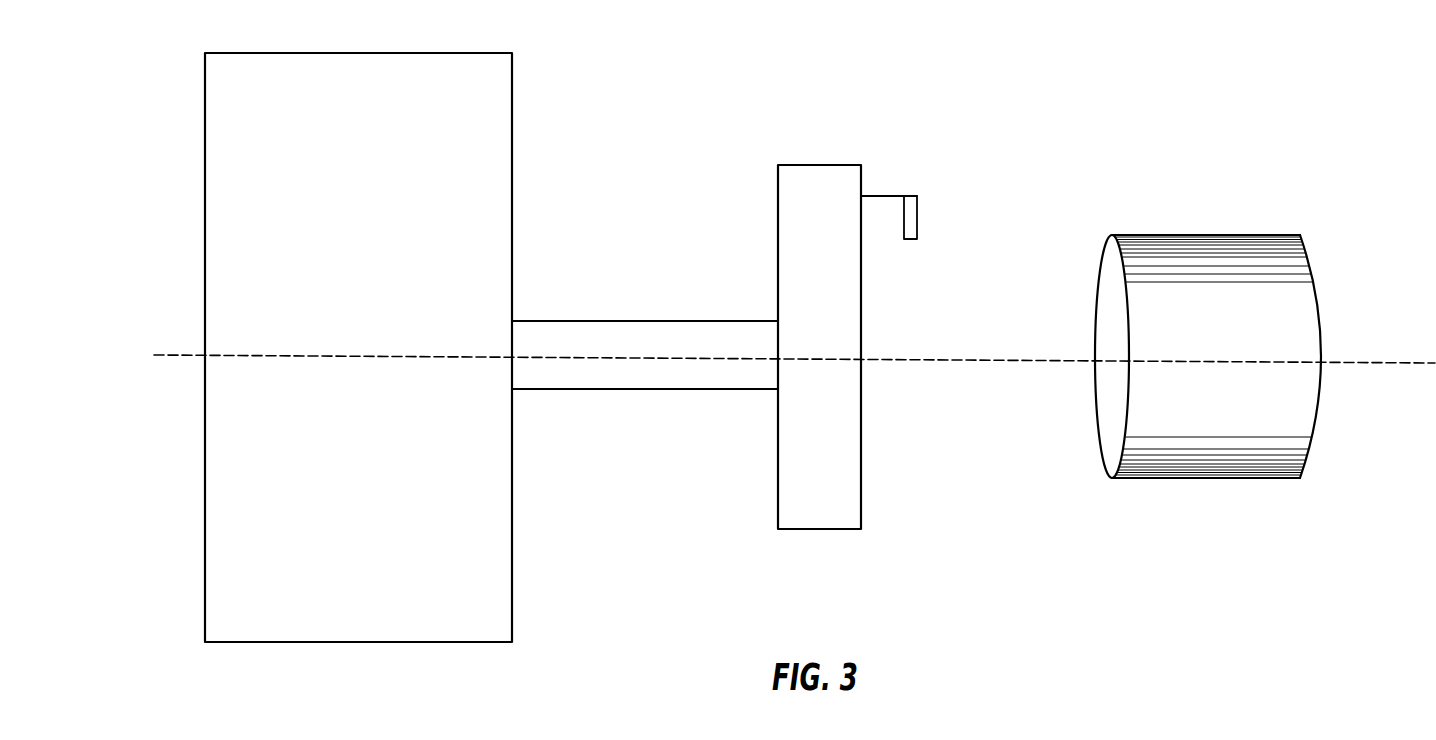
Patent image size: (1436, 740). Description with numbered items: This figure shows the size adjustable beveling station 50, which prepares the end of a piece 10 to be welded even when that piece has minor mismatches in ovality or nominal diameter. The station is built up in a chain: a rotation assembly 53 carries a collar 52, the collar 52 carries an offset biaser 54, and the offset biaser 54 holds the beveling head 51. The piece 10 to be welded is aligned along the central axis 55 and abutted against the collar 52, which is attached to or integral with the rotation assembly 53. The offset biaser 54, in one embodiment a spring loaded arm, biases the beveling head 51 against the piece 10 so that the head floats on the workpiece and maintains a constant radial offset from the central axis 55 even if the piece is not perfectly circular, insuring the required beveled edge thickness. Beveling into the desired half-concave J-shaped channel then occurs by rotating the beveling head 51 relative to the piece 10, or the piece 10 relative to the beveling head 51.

The piece to be welded 10 is at (1208, 379).
The size adjustable beveling station 50 is at (401, 347).
The beveling head 51 is at (955, 210).
The collar 52 is at (865, 347).
The rotation assembly 53 is at (645, 388).
The offset biaser 54 is at (905, 172).
The central axis 55 is at (794, 390).